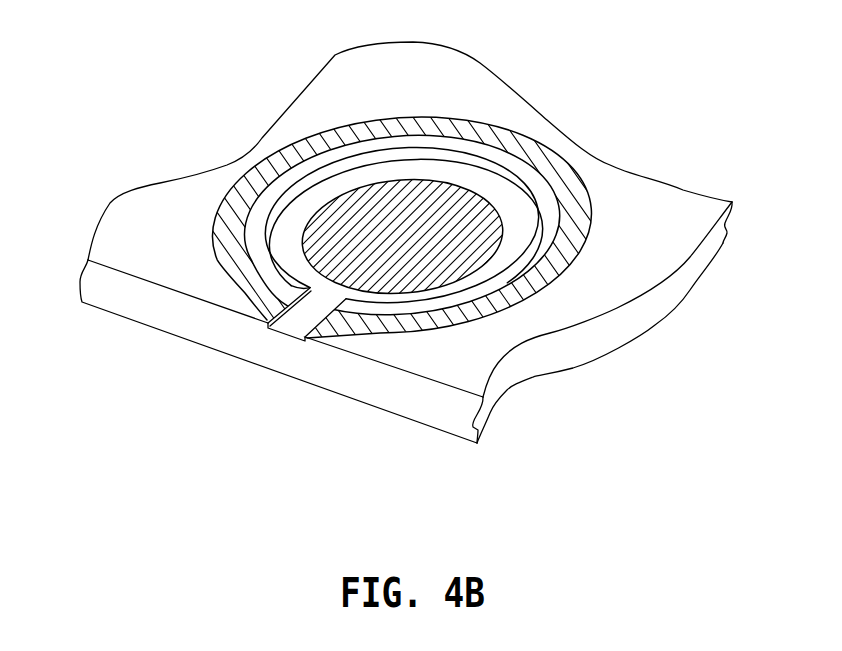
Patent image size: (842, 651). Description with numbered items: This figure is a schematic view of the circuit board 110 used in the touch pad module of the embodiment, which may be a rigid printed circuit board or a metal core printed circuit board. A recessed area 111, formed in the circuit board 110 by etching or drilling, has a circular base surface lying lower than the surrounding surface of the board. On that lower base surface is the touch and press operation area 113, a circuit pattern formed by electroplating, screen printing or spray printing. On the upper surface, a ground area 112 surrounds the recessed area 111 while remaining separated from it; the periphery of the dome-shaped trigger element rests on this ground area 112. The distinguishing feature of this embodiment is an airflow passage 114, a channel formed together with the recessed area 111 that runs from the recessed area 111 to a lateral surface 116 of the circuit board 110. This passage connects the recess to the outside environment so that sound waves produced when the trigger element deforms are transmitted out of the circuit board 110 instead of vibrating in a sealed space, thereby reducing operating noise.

The circuit board 110 is at (433, 373).
The recessed area 111 is at (513, 225).
The ground area 112 is at (545, 272).
The touch and press operation area 113 is at (426, 217).
The airflow passage 114 is at (297, 319).
The lateral surface 116 is at (168, 305).